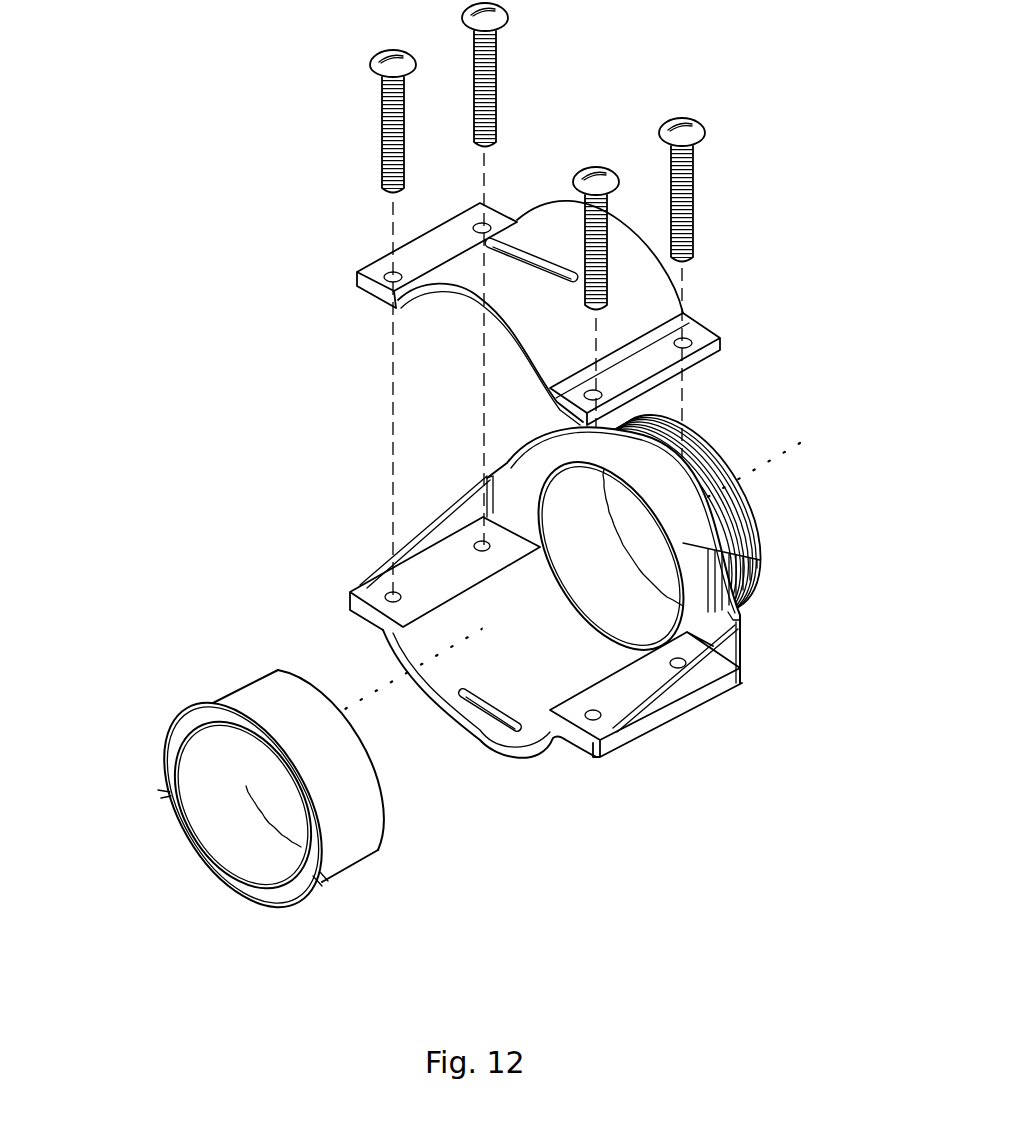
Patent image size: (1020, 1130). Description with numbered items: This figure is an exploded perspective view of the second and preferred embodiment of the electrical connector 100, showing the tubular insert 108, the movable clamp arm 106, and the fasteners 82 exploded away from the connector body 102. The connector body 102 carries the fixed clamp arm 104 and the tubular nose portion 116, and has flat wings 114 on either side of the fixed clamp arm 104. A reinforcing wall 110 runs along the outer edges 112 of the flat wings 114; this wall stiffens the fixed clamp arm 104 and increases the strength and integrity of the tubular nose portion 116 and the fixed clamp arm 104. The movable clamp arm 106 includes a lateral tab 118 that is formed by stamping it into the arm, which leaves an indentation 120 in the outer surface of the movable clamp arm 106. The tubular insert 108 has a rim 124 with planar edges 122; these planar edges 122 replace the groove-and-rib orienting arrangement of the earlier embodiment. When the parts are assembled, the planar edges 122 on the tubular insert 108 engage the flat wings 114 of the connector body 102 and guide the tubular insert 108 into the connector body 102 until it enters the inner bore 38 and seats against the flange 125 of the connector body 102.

The electrical connector 100 is at (165, 274).
The connector body 102 is at (535, 601).
The fixed clamp arm 104 is at (350, 603).
The movable clamp arm 106 is at (465, 247).
The tubular insert 108 is at (226, 785).
The reinforcing wall 110 is at (718, 660).
The outer edges 112 is at (663, 727).
The flat wings 114 is at (466, 579).
The tubular nose portion 116 is at (697, 537).
The lateral tab 118 is at (490, 713).
The indentation 120 is at (540, 253).
The planar edges 122 is at (163, 793).
The rim 124 is at (213, 702).
The flange 125 is at (690, 537).
The inner bore 38 is at (632, 585).
The fasteners 82 is at (381, 122).